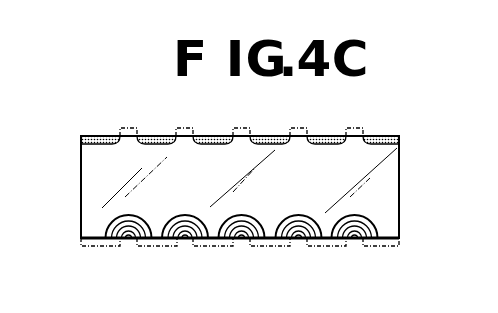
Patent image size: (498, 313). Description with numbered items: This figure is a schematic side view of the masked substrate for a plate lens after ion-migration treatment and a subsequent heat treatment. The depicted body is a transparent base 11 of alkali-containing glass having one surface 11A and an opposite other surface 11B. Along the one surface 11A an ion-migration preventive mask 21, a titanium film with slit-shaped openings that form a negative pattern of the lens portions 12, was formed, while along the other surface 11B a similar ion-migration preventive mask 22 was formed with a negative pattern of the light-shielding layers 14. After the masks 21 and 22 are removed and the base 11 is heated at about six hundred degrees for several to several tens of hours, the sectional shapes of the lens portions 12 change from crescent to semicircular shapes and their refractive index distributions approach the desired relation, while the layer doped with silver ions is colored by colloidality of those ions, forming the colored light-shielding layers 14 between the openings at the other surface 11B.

The transparent base 11 is at (386, 194).
The one surface of the transparent base 11A is at (297, 240).
The other surface of the transparent base 11B is at (263, 135).
The lens portions 12 is at (149, 239).
The light-shielding layers 14 is at (204, 135).
The ion-migration preventive mask 21 is at (340, 250).
The ion-migration preventive mask 22 is at (306, 127).